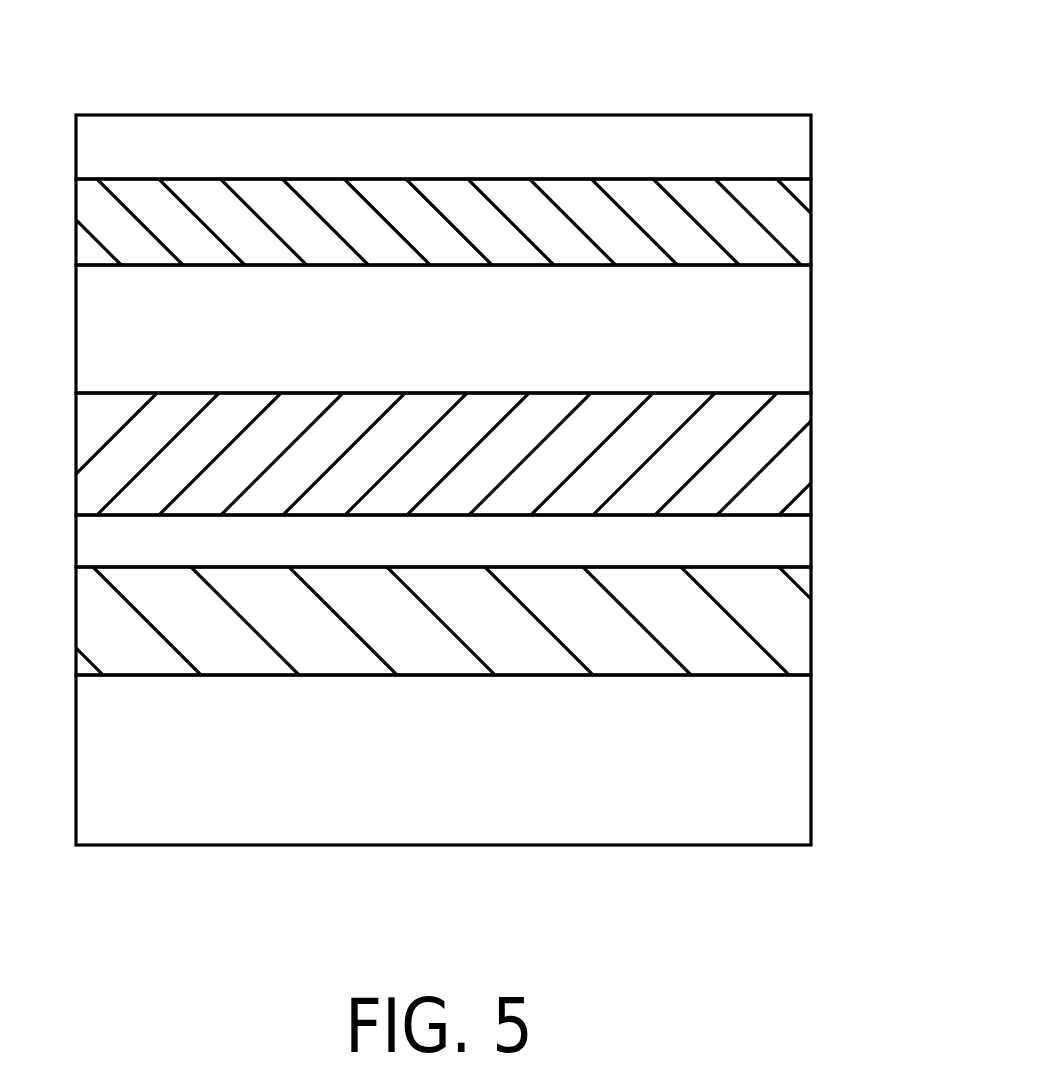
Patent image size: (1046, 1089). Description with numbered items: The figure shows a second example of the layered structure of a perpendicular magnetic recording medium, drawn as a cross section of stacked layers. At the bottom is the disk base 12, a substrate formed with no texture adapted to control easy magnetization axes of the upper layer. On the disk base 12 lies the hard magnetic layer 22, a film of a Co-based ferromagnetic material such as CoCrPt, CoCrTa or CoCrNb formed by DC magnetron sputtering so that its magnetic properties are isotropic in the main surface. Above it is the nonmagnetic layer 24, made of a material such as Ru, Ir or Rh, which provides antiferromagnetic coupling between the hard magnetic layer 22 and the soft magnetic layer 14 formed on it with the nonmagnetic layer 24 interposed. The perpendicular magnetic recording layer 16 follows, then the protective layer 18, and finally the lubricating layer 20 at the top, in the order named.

The disk base 12 is at (785, 770).
The soft magnetic layer 14 is at (787, 468).
The perpendicular magnetic recording layer 16 is at (778, 350).
The protective layer 18 is at (793, 226).
The lubricating layer 20 is at (790, 148).
The hard magnetic layer 22 is at (787, 637).
The nonmagnetic layer 24 is at (787, 547).